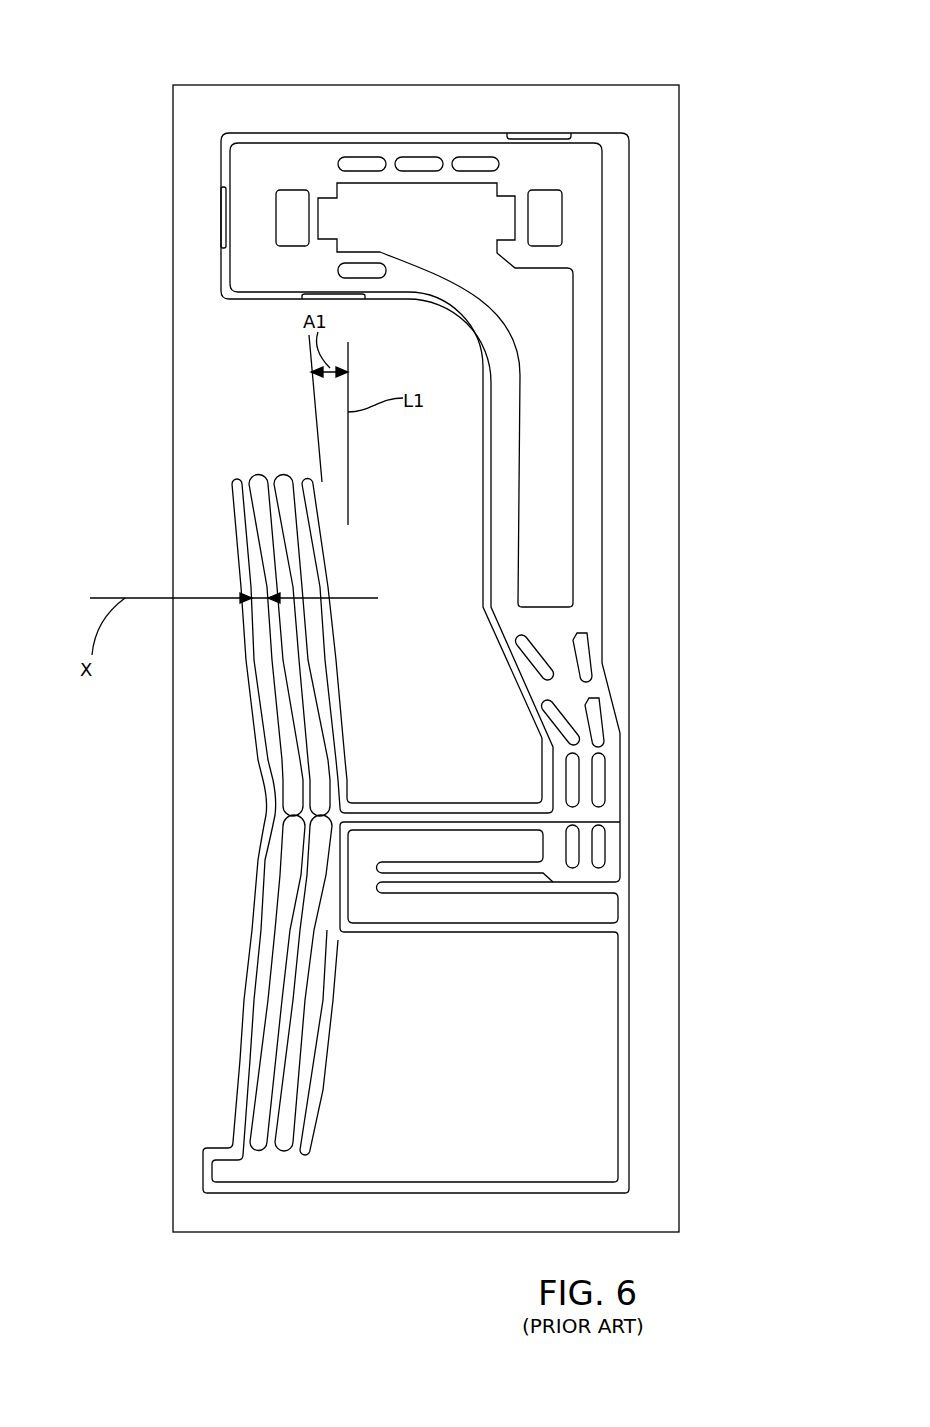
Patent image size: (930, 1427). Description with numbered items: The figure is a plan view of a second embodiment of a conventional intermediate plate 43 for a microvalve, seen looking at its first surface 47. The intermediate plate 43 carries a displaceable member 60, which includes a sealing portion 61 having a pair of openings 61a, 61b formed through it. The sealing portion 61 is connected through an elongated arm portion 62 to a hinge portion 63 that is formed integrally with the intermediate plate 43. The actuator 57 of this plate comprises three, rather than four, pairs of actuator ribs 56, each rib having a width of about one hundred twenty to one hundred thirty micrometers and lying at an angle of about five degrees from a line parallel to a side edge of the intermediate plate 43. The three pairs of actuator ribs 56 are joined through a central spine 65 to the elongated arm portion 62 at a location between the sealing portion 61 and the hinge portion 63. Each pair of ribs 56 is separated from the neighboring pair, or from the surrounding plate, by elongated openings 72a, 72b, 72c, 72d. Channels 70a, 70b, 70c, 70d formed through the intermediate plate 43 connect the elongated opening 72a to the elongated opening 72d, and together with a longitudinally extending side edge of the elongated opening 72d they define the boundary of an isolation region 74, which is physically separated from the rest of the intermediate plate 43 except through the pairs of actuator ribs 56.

The intermediate plate 43 is at (226, 86).
The first surface 47 is at (235, 346).
The actuator ribs 56 is at (310, 557).
The actuator 57 is at (230, 819).
The displaceable member 60 is at (606, 448).
The sealing portion 61 is at (587, 158).
The opening 61a is at (280, 238).
The opening 61b is at (560, 236).
The elongated arm portion 62 is at (612, 512).
The hinge portion 63 is at (462, 880).
The central spine 65 is at (445, 818).
The channel 70a is at (590, 923).
The channel 70b is at (623, 1032).
The channel 70c is at (523, 1188).
The channel 70d is at (215, 1172).
The elongated opening 72a is at (255, 925).
The elongated opening 72b is at (270, 1000).
The elongated opening 72c is at (305, 945).
The elongated opening 72d is at (332, 990).
The isolation region 74 is at (583, 1122).